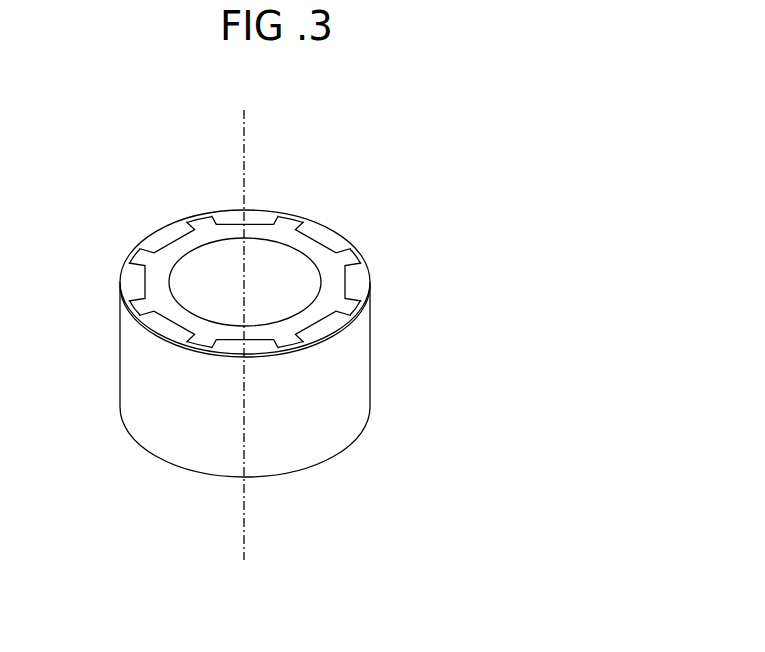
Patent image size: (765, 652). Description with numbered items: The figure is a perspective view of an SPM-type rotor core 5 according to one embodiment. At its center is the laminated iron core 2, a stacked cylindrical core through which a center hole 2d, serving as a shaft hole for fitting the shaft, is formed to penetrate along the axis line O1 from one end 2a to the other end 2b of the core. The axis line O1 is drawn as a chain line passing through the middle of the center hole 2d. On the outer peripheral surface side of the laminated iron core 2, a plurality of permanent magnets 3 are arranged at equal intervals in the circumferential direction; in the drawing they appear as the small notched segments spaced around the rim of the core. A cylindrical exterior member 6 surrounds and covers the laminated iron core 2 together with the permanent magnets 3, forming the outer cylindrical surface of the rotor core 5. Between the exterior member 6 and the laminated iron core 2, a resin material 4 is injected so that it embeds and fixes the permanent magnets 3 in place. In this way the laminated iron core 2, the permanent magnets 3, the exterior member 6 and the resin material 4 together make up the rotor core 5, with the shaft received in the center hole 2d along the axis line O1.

The laminated iron core 2 is at (352, 252).
The one end 2a is at (340, 453).
The other end 2b is at (370, 282).
The center hole 2d is at (213, 272).
The permanent magnet 3 is at (168, 215).
The resin material 4 is at (122, 302).
The SPM-type rotor core 5 is at (435, 187).
The cylindrical exterior member 6 is at (357, 402).
The axis line O1 is at (243, 319).